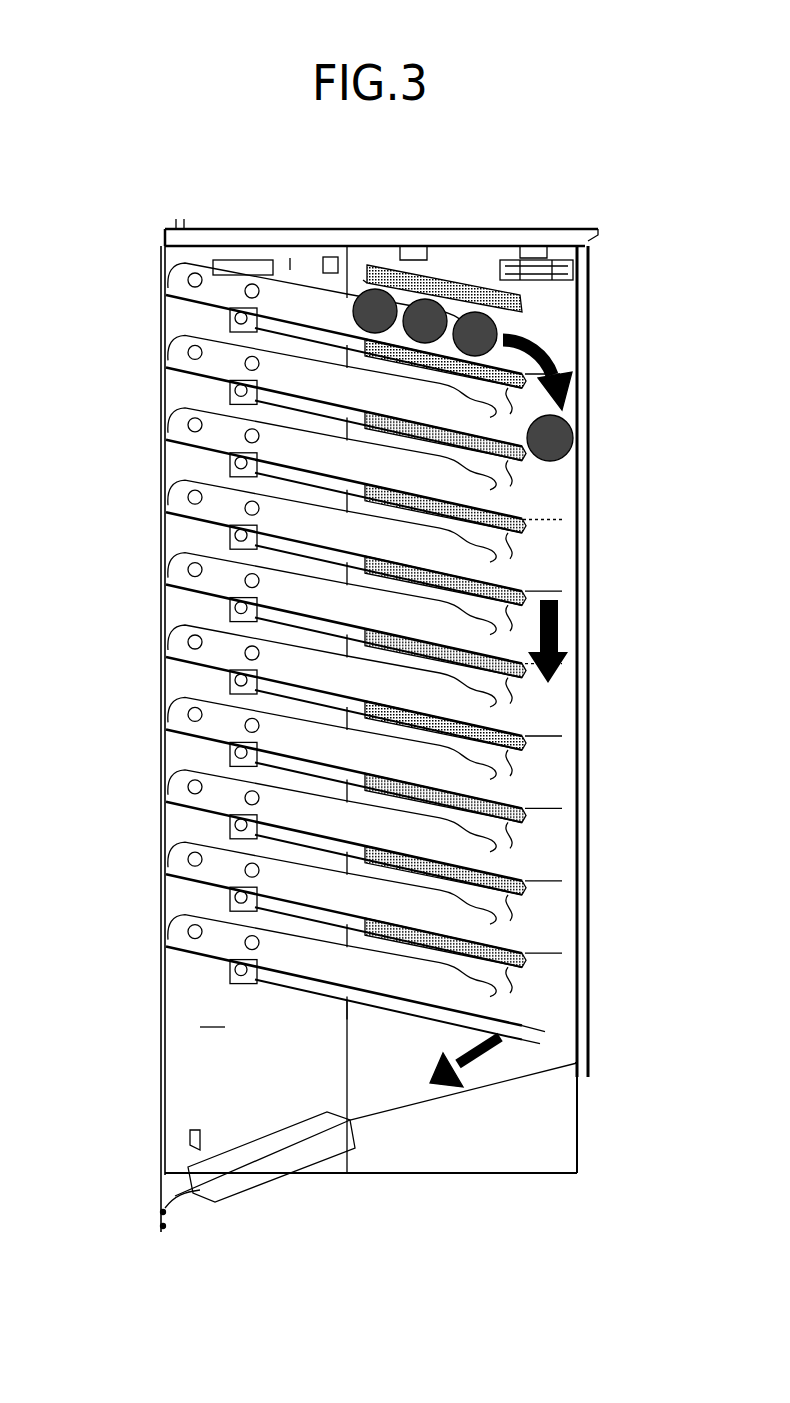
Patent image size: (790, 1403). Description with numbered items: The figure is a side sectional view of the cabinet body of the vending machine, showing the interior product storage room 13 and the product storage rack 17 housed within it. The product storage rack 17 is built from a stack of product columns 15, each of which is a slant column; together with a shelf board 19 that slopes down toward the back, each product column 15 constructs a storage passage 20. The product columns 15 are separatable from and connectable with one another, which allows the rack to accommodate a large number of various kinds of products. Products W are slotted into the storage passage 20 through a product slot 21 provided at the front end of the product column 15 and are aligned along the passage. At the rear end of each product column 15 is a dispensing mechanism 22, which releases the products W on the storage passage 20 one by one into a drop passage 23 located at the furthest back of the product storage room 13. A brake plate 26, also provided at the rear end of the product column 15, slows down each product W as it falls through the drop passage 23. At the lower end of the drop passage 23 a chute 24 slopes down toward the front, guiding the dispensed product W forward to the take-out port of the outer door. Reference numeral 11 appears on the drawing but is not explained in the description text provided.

The commodity storage rack 11 is at (597, 202).
The product storage room 13 is at (562, 318).
The product column 15 is at (177, 387).
The product storage rack 17 is at (160, 537).
The shelf board 19 is at (212, 318).
The storage passage 20 is at (306, 298).
The product slot 21 is at (158, 393).
The dispensing mechanism 22 is at (473, 290).
The drop passage 23 is at (553, 553).
The chute 24 is at (398, 1100).
The brake plate 26 is at (553, 517).
The product W is at (357, 296).